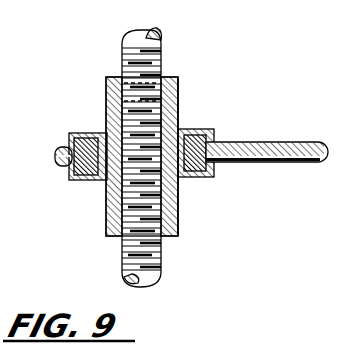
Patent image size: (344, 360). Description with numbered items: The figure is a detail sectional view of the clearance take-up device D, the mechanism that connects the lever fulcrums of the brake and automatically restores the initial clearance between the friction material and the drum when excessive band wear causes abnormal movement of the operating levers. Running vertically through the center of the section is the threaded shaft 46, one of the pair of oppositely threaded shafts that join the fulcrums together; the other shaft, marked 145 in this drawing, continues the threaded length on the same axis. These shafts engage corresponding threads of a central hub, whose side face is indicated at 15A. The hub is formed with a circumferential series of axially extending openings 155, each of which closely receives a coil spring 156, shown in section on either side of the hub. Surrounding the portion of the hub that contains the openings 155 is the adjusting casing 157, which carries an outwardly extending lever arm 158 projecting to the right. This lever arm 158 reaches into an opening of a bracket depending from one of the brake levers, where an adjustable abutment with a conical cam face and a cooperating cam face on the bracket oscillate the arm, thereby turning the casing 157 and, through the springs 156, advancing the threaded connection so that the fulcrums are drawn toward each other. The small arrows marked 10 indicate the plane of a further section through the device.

The threaded shaft 145 is at (163, 42).
The oppositely threaded shaft 46 is at (168, 263).
The clearance take-up device D is at (179, 206).
The nut side face 15A is at (179, 130).
The axially extending opening 155 is at (106, 133).
The coil spring 156 is at (83, 133).
The adjusting casing 157 is at (208, 129).
The lever arm 158 is at (290, 143).
The section line 10 is at (37, 117).